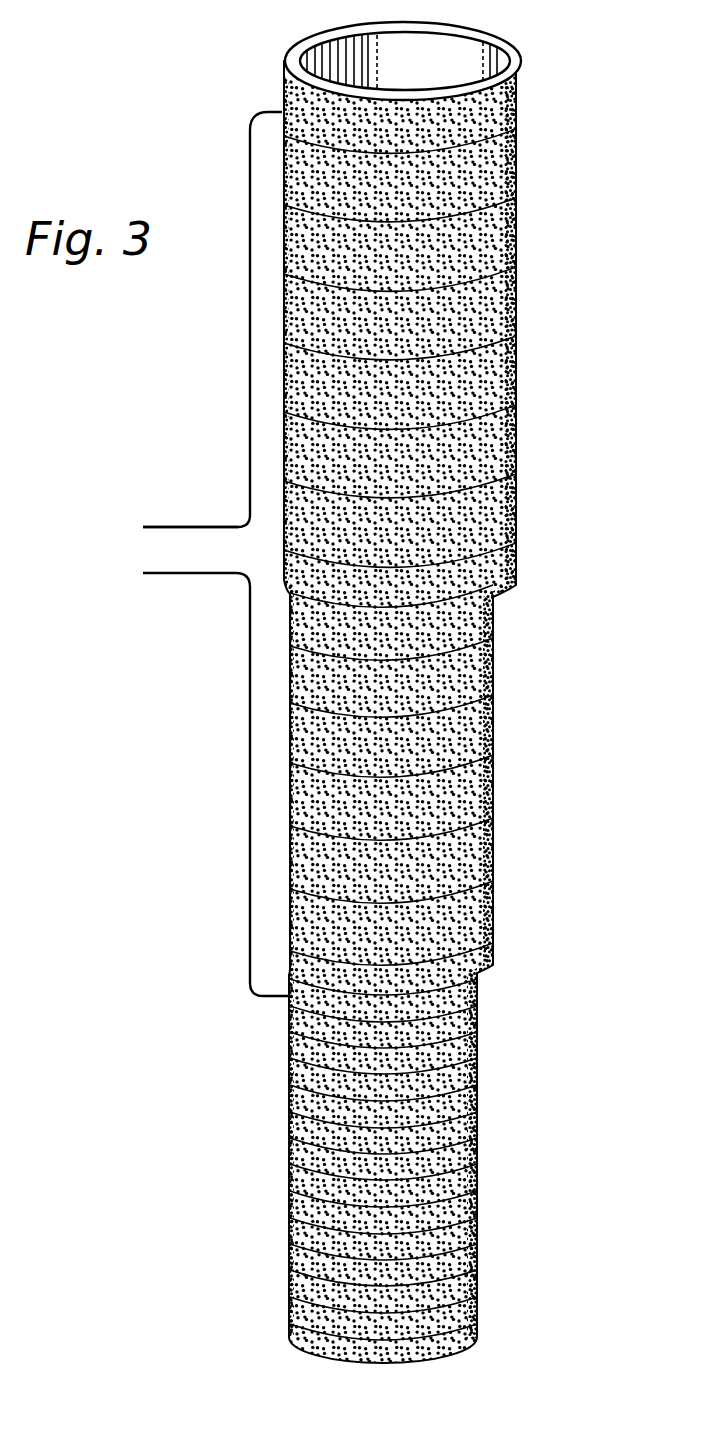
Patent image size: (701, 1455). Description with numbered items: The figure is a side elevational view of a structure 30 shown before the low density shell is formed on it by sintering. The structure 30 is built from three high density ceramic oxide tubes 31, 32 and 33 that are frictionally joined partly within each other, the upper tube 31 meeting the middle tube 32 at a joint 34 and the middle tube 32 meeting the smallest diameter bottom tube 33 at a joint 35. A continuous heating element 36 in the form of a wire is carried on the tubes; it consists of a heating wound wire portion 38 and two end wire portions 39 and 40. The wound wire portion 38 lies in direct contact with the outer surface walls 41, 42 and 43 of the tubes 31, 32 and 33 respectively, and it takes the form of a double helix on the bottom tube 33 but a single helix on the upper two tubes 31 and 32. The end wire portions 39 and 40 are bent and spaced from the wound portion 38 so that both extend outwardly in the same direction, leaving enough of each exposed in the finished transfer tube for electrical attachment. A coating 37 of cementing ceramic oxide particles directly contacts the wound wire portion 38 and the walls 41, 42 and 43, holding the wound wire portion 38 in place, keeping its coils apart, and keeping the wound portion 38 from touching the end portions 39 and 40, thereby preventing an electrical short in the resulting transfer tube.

The structure 30 is at (528, 38).
The high density ceramic oxide tube 31 is at (320, 37).
The high density ceramic oxide tube 32 is at (493, 705).
The high density ceramic oxide tube 33 is at (476, 1032).
The joint 34 is at (500, 585).
The joint 35 is at (478, 973).
The heating element 36 is at (249, 346).
The coating 37 is at (517, 227).
The heating wound wire portion 38 is at (515, 313).
The end wire portion 39 is at (181, 573).
The end wire portion 40 is at (193, 527).
The outer surface wall 41 is at (520, 92).
The outer surface wall 42 is at (494, 643).
The outer surface wall 43 is at (476, 1108).